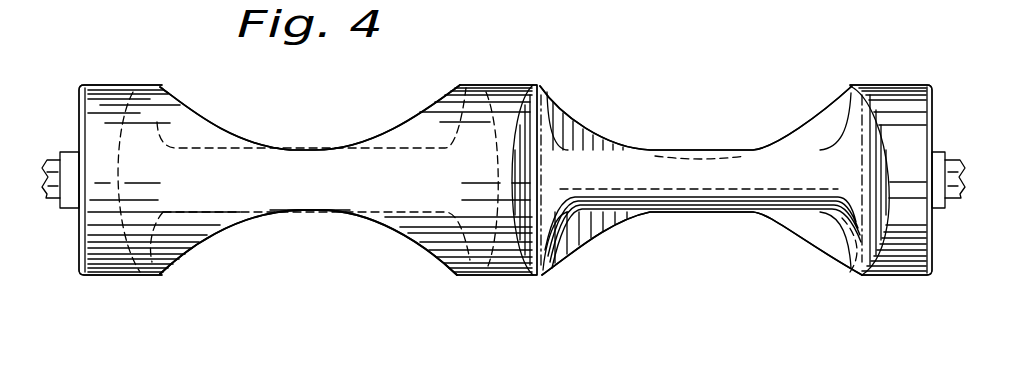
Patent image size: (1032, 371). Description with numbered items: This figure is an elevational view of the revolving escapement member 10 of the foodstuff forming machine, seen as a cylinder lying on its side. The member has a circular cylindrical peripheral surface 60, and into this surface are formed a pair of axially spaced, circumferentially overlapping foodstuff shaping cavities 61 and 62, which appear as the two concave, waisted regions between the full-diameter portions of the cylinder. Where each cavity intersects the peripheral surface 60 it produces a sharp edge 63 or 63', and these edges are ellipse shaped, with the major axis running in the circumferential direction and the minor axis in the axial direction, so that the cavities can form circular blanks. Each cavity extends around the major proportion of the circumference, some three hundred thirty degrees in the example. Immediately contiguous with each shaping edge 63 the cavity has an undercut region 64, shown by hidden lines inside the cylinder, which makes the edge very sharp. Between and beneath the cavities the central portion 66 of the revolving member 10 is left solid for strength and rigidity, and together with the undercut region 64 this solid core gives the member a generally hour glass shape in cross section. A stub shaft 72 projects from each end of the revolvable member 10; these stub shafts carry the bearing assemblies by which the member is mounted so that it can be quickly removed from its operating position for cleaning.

The revolving escapement member 10 is at (530, 68).
The circular cylindrical peripheral surface 60 is at (510, 278).
The foodstuff shaping cavity 61 is at (337, 130).
The foodstuff shaping cavity 62 is at (744, 118).
The sharp edge 63 is at (409, 205).
The sharp edge 63' is at (701, 161).
The undercut region 64 is at (167, 101).
The central portion 66 is at (317, 213).
The stub shaft 72 is at (68, 212).